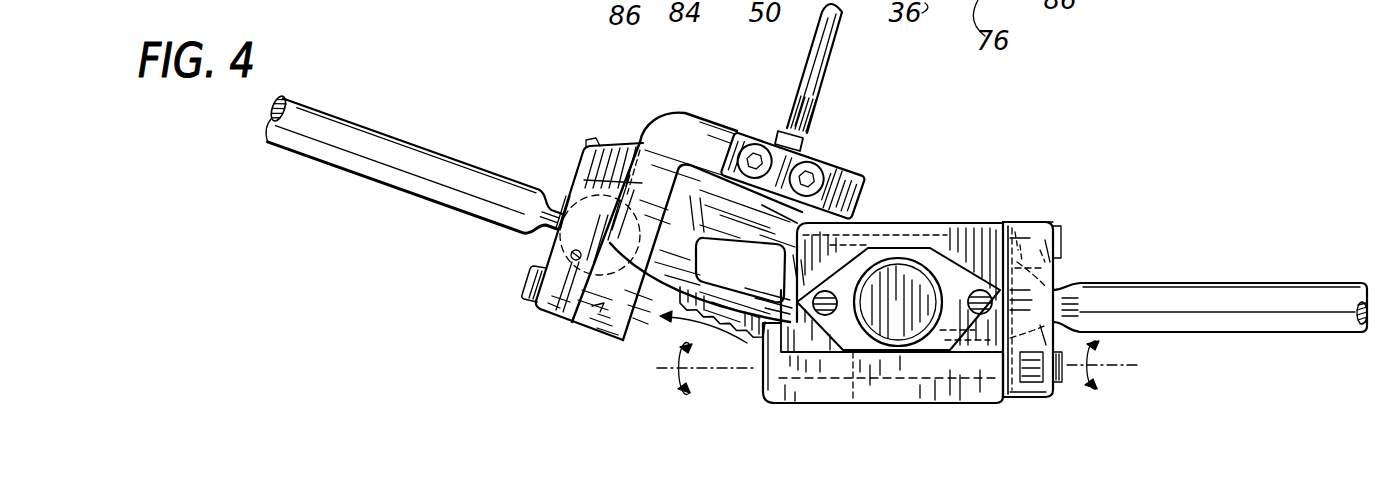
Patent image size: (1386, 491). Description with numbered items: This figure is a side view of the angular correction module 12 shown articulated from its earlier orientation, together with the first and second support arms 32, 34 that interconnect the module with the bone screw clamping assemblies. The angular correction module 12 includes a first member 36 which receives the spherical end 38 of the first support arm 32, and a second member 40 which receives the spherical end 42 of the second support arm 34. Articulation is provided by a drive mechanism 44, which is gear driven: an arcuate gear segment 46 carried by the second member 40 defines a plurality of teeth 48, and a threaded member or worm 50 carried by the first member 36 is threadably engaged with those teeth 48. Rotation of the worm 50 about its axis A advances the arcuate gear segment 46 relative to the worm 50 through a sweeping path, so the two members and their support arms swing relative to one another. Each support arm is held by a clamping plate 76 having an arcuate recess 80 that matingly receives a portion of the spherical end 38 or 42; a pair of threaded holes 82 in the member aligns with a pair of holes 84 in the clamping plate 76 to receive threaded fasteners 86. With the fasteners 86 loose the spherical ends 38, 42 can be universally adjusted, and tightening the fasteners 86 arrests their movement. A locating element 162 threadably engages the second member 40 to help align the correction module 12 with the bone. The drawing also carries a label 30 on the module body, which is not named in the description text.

The angular correction module 12 is at (1075, 135).
The central body / housing 30 is at (722, 90).
The first support arm 32 is at (1200, 265).
The second support arm 34 is at (373, 112).
The first member 36 is at (964, 412).
The end of the first support arm 38 is at (1058, 263).
The second member 40 is at (893, 158).
The end of the second support arm 42 is at (580, 192).
The drive mechanism 44 is at (648, 343).
The arcuate gear segment 46 is at (693, 222).
The teeth 48 is at (722, 330).
The worm 50 is at (813, 384).
The clamping plate 76 is at (540, 322).
The arcuate recess 80 is at (570, 254).
The threaded holes 82 is at (617, 326).
The holes 84 is at (625, 160).
The threaded fasteners 86 is at (574, 147).
The locating element 162 is at (836, 62).
The axis of the worm A is at (1122, 365).